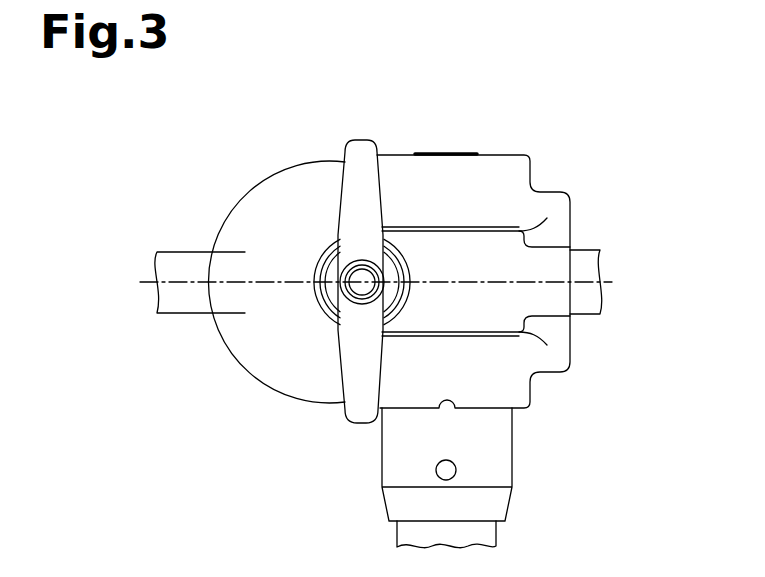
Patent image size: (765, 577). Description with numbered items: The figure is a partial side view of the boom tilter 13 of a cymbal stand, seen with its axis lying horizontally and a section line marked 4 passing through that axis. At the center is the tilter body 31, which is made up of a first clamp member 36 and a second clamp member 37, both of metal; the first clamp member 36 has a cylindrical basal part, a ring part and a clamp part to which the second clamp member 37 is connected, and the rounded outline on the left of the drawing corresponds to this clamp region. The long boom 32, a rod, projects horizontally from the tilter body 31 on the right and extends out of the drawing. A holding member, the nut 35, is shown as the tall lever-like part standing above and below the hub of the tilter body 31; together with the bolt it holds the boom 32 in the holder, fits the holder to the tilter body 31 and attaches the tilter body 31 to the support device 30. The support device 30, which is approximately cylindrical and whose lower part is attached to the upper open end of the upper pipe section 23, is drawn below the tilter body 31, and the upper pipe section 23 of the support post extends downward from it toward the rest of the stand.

The boom tilter 13 is at (628, 104).
The section line IV-IV 4 is at (140, 282).
The upper pipe section 23 is at (496, 538).
The support device 30 is at (512, 452).
The tilter body 31 is at (537, 150).
The boom 32 is at (593, 250).
The nut 35 is at (358, 140).
The first clamp member 36 is at (280, 375).
The second clamp member 37 is at (478, 227).